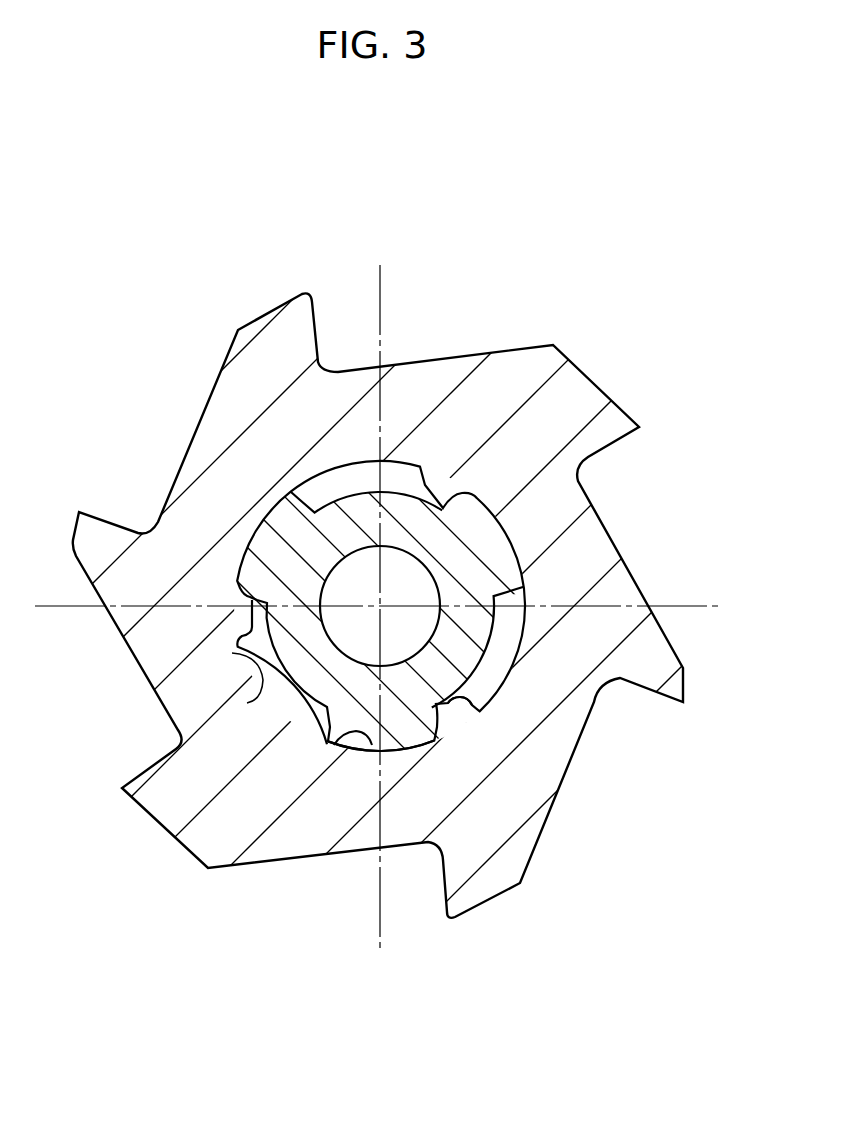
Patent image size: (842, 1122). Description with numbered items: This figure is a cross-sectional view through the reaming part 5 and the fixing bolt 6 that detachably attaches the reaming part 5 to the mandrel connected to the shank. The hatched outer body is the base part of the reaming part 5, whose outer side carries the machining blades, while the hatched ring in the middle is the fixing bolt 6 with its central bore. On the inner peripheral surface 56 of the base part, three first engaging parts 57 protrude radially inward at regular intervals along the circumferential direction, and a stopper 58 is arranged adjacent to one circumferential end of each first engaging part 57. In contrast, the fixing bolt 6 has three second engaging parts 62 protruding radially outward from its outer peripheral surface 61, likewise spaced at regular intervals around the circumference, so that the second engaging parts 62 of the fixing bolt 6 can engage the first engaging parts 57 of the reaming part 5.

The reaming part 5 is at (592, 363).
The fixing bolt 6 is at (388, 684).
The inner peripheral surface 56 is at (236, 656).
The first engaging parts 57 is at (335, 745).
The stopper 58 is at (478, 705).
The outer peripheral surface 61 is at (300, 690).
The second engaging parts 62 is at (392, 750).